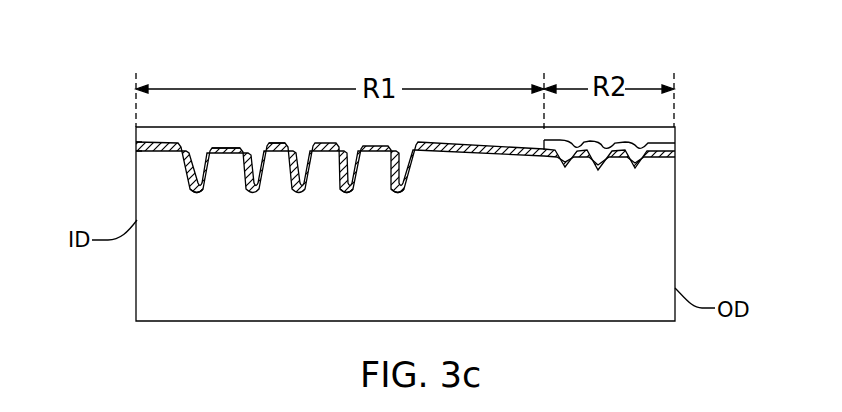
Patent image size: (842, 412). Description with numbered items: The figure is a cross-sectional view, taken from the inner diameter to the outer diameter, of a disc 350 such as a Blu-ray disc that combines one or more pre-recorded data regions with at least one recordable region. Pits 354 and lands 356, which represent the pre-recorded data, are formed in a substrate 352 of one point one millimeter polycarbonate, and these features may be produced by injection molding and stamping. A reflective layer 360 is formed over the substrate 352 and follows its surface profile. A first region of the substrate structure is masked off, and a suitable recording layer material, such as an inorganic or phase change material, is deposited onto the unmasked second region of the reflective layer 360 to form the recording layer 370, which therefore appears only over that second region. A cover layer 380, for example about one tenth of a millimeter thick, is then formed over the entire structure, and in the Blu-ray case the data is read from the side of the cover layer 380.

The disc 350 is at (114, 78).
The substrate 352 is at (675, 233).
The pits 354 is at (196, 194).
The lands 356 is at (223, 153).
The reflective layer 360 is at (675, 152).
The recording layer 370 is at (675, 146).
The cover layer 380 is at (134, 140).